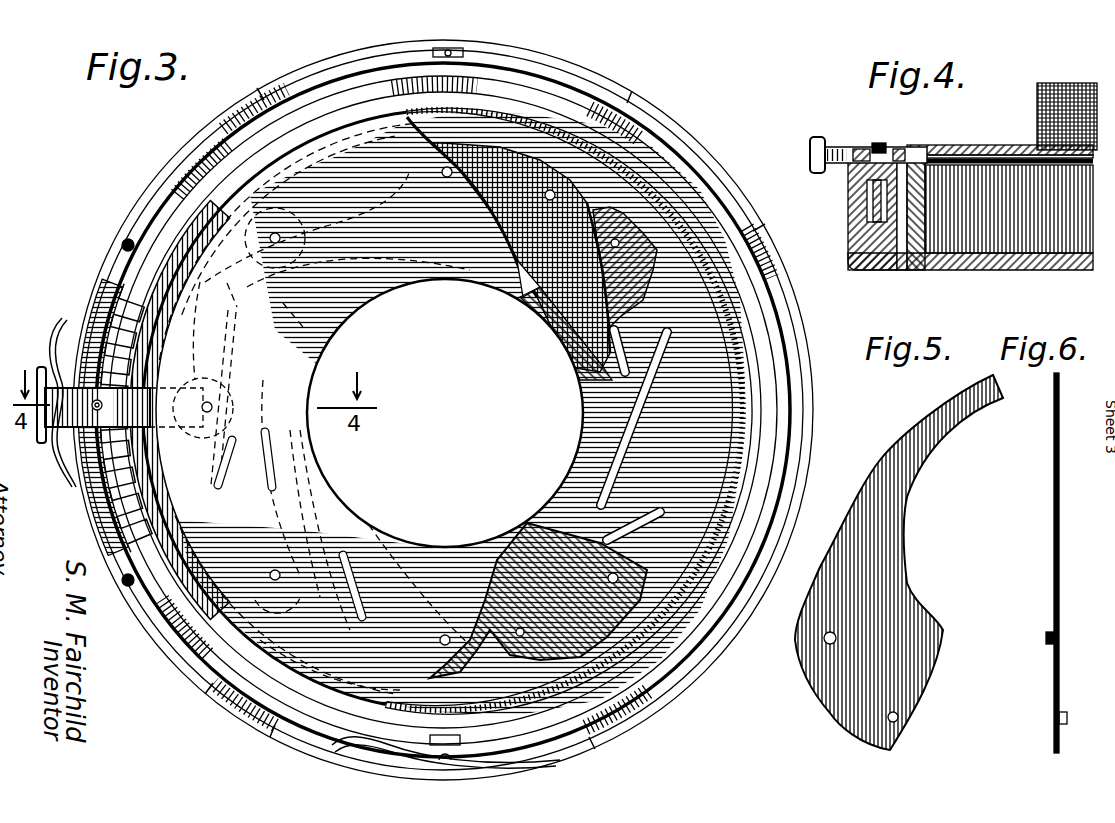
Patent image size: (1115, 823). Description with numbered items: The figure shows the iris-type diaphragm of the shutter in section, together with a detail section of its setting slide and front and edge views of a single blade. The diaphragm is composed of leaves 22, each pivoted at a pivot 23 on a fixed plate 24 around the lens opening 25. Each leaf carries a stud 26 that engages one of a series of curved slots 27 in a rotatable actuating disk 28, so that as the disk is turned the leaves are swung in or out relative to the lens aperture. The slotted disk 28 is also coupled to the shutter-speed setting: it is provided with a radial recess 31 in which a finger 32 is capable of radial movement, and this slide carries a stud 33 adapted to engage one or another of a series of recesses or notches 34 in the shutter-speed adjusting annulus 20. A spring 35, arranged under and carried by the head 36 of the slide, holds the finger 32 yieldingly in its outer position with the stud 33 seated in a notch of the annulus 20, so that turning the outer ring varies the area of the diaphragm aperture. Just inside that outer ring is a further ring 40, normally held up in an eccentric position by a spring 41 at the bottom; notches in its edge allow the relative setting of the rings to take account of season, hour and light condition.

In FIG. 4, the shutter-speed adjusting annulus 20 is at (850, 232).
In FIG. 3, the leaves 22 is at (545, 312).
In FIG. 5, the leaves 22 is at (910, 590).
In FIG. 6, the leaves 22 is at (1054, 495).
In FIG. 3, the pivot 23 is at (620, 243).
In FIG. 5, the pivot 23 is at (888, 722).
In FIG. 6, the pivot 23 is at (1065, 724).
In FIG. 3, the fixed plate 24 is at (375, 127).
In FIG. 3, the lens opening 25 is at (445, 413).
In FIG. 3, the stud 26 is at (545, 195).
In FIG. 5, the stud 26 is at (836, 640).
In FIG. 6, the stud 26 is at (1046, 640).
In FIG. 3, the curved slots 27 is at (665, 342).
In FIG. 3, the rotatable actuating disk 28 is at (567, 488).
In FIG. 4, the rotatable actuating disk 28 is at (1030, 145).
In FIG. 3, the radial recess 31 is at (203, 392).
In FIG. 4, the radial recess 31 is at (980, 153).
In FIG. 3, the finger 32 is at (55, 385).
In FIG. 4, the finger 32 is at (955, 145).
In FIG. 3, the stud 33 is at (102, 410).
In FIG. 4, the stud 33 is at (879, 143).
In FIG. 3, the recesses or notches 34 is at (110, 466).
In FIG. 4, the recesses or notches 34 is at (900, 149).
In FIG. 3, the spring 35 is at (62, 318).
In FIG. 4, the spring 35 is at (840, 147).
In FIG. 3, the head 36 is at (37, 430).
In FIG. 4, the head 36 is at (810, 150).
In FIG. 3, the ring 40 is at (525, 62).
In FIG. 4, the ring 40 is at (850, 194).
In FIG. 3, the spring 41 is at (515, 762).